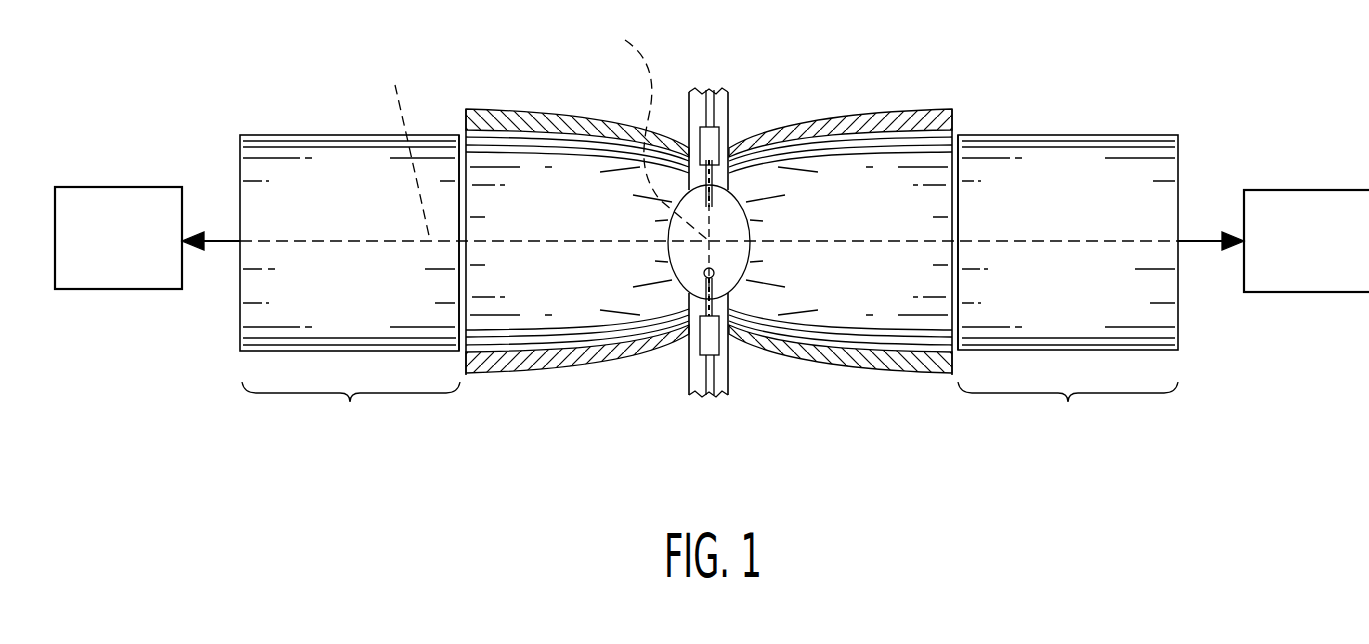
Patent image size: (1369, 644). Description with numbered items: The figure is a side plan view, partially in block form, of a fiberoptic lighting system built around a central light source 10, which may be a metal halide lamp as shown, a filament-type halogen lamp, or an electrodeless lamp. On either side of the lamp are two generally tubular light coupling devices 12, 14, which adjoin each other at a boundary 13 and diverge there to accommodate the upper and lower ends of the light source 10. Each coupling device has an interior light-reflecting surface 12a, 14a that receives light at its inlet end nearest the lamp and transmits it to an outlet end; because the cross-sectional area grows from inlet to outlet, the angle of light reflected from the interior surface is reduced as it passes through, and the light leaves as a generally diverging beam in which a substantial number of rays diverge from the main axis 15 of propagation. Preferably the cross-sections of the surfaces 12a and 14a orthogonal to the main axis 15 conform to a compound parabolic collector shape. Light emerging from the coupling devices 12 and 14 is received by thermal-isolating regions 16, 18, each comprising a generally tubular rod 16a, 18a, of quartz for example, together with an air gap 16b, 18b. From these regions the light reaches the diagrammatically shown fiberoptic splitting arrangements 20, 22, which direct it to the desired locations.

The light source 10 is at (730, 106).
The light coupling device 12 is at (840, 211).
The interior light-reflecting surface 12a is at (865, 285).
The boundary 13 is at (653, 127).
The light coupling device 14 is at (577, 211).
The interior light-reflecting surface 14a is at (582, 219).
The main axis 15 is at (405, 149).
The thermal-isolating region 16 is at (1068, 223).
The tubular rod 16a is at (1065, 163).
The air gap 16b is at (960, 123).
The thermal-isolating region 18 is at (351, 223).
The tubular rod 18a is at (322, 160).
The air gap 18b is at (460, 122).
The fiberoptic splitting arrangement 20 is at (1321, 253).
The fiberoptic splitting arrangement 22 is at (129, 253).